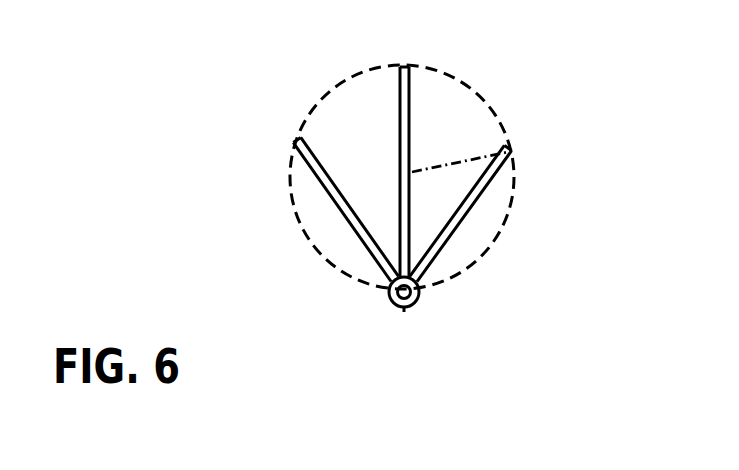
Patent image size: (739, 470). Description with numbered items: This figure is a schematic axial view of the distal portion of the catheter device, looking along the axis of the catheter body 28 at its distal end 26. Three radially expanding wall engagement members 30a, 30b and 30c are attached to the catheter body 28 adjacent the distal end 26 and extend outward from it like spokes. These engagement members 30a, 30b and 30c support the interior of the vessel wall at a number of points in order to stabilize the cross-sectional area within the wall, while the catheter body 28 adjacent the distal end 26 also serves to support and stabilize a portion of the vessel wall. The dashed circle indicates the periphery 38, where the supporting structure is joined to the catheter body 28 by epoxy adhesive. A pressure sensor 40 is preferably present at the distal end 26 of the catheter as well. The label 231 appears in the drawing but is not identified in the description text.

The distal end 26 is at (421, 306).
The catheter body 28 is at (405, 308).
The wall engagement member 30a is at (412, 70).
The wall engagement member 30b is at (506, 160).
The wall engagement member 30c is at (310, 170).
The periphery 38 is at (480, 262).
The pressure sensor 40 is at (391, 300).
The angle 231 is at (480, 158).